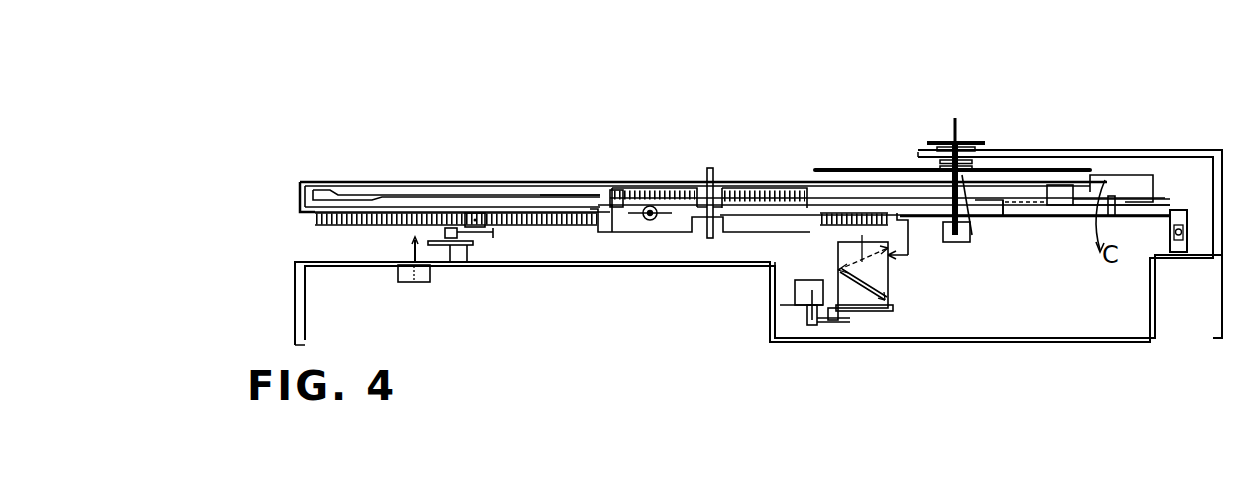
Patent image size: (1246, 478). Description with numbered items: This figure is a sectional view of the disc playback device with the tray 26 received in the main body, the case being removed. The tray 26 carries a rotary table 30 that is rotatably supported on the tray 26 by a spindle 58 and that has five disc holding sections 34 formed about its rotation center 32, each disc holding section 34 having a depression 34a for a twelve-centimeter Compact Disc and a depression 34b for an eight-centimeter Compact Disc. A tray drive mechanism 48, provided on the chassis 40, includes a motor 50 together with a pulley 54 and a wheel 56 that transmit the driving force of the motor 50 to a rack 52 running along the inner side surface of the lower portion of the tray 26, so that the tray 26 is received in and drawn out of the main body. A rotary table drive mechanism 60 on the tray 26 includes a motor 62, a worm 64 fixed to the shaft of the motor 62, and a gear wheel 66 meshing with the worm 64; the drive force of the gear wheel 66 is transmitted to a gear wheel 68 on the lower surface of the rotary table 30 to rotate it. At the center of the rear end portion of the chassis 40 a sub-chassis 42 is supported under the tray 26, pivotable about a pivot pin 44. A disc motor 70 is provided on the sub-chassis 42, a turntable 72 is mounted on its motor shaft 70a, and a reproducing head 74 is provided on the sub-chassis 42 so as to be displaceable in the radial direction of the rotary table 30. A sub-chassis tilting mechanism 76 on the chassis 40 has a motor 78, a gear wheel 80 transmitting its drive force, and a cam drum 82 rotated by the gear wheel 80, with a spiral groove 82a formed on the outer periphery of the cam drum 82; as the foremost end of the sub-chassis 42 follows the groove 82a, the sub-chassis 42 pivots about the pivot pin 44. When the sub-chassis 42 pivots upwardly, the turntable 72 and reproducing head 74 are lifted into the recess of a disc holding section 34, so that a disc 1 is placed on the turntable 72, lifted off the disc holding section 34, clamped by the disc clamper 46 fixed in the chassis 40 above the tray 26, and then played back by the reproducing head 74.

The disc 1 is at (840, 170).
The tray 26 is at (300, 193).
The rotary table 30 is at (515, 183).
The rotation center 32 is at (705, 170).
The disc holding section 34 is at (446, 193).
The depression 34a is at (607, 207).
The depression 34b is at (562, 196).
The chassis 40 is at (296, 262).
The sub-chassis 42 is at (1048, 212).
The pivot pin 44 is at (1172, 210).
The disc clamper 46 is at (968, 142).
The tray drive mechanism 48 is at (445, 290).
The motor 50 is at (411, 283).
The rack 52 is at (355, 211).
The pulley 54 is at (461, 253).
The wheel 56 is at (492, 252).
The spindle 58 is at (716, 168).
The rotary table drive mechanism 60 is at (643, 212).
The motor 62 is at (663, 232).
The worm 64 is at (662, 208).
The gear wheel 66 is at (620, 205).
The gear wheel 68 is at (745, 197).
The disc motor 70 is at (945, 244).
The motor shaft 70a is at (967, 178).
The turntable 72 is at (980, 190).
The reproducing head 74 is at (1050, 168).
The sub-chassis tilting mechanism 76 is at (790, 327).
The motor 78 is at (800, 292).
The gear wheel 80 is at (822, 320).
The cam drum 82 is at (876, 318).
The spiral groove 82a is at (884, 312).